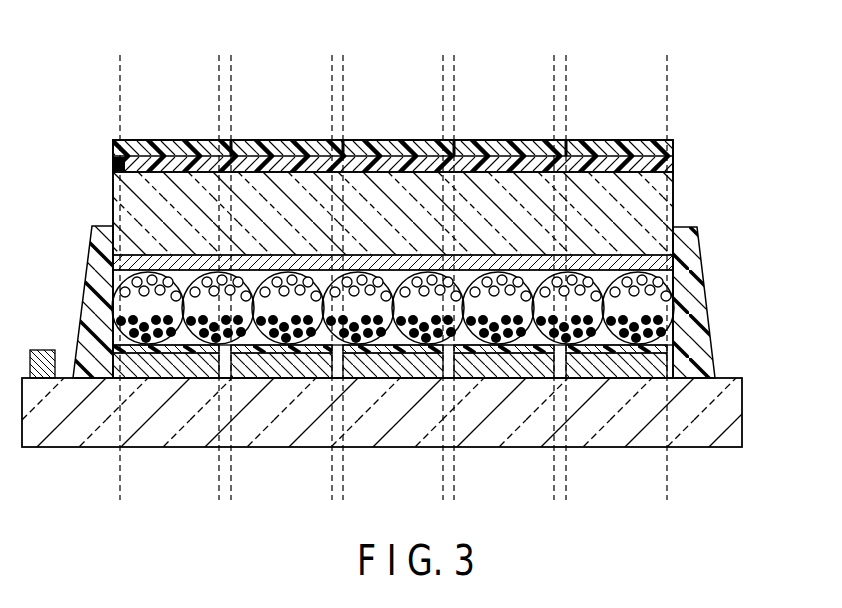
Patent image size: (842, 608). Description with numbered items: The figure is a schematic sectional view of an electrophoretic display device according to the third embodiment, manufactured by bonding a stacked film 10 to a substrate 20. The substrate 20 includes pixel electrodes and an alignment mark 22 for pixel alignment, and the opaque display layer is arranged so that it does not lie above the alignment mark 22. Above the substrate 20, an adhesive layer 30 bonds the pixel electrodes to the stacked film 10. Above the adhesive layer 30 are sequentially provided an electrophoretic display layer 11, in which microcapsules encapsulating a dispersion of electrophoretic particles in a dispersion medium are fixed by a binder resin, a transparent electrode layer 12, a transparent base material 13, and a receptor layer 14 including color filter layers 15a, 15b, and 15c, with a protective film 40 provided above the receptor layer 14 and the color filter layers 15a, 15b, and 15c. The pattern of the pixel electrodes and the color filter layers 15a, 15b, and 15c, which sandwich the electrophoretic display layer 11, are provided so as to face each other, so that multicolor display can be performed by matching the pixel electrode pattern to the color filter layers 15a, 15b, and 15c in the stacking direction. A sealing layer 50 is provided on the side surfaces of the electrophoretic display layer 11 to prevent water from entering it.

The stacked film 10 is at (463, 233).
The electrophoretic display layer 11 is at (660, 308).
The transparent electrode layer 12 is at (660, 266).
The transparent base material 13 is at (662, 205).
The receptor layer 14 is at (432, 135).
The color filter layer 15a is at (178, 162).
The color filter layer 15b is at (287, 162).
The color filter layer 15c is at (395, 162).
The substrate 20 is at (755, 358).
The alignment mark 22 is at (45, 350).
The adhesive layer 30 is at (668, 352).
The protective film 40 is at (113, 152).
The sealing layer 50 is at (101, 233).